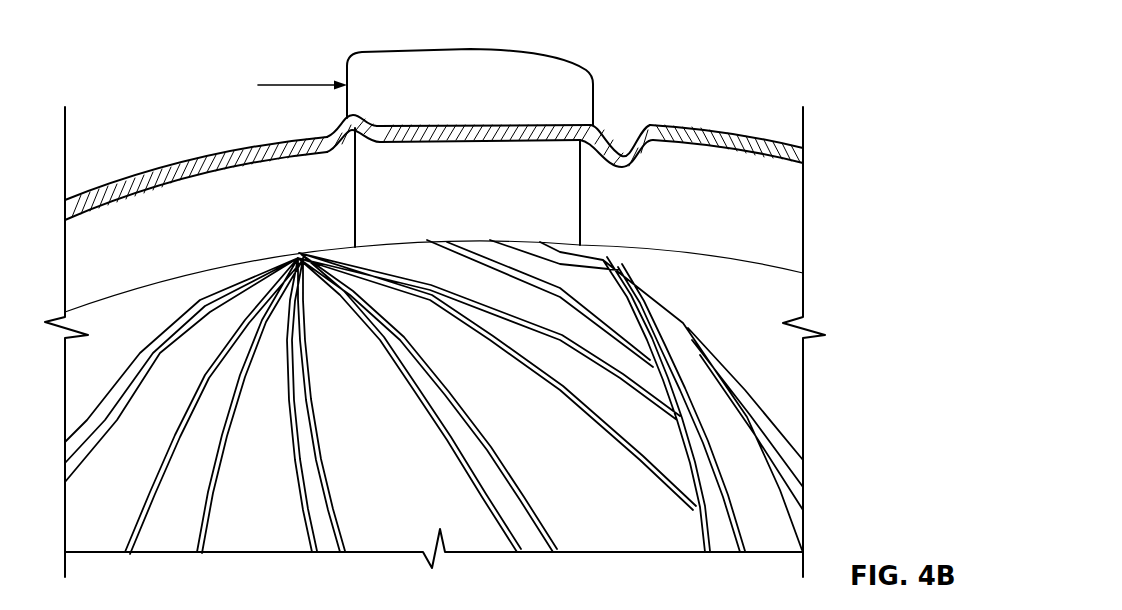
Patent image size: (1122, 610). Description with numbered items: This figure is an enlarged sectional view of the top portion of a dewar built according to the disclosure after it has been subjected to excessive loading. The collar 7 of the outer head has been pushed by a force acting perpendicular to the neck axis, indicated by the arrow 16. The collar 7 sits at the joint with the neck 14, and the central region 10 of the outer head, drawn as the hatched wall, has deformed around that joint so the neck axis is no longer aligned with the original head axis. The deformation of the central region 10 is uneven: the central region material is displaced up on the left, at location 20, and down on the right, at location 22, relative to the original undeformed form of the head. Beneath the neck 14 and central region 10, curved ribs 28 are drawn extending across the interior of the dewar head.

The collar 7 is at (523, 70).
The central region 10 is at (220, 153).
The neck 14 is at (357, 192).
The arrow 16 is at (297, 85).
The central region material displaced up 20 is at (343, 123).
The central region material displaced down 22 is at (641, 150).
The ribs 28 is at (730, 458).